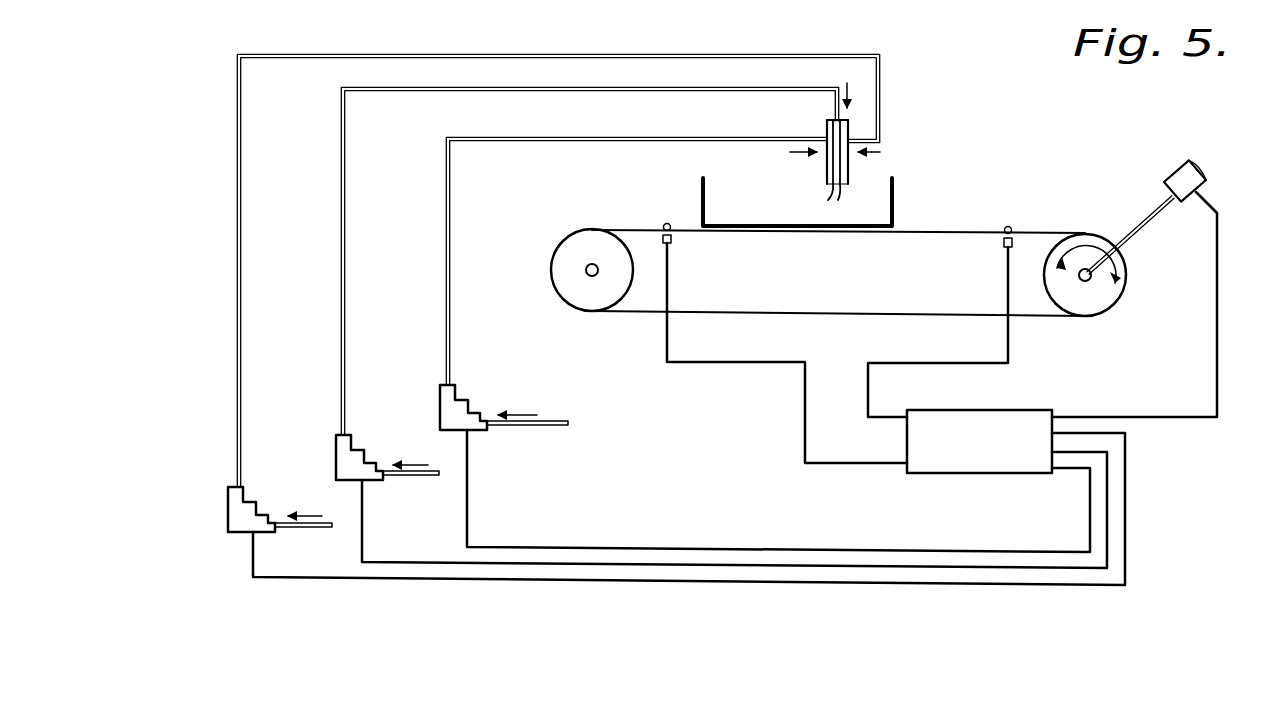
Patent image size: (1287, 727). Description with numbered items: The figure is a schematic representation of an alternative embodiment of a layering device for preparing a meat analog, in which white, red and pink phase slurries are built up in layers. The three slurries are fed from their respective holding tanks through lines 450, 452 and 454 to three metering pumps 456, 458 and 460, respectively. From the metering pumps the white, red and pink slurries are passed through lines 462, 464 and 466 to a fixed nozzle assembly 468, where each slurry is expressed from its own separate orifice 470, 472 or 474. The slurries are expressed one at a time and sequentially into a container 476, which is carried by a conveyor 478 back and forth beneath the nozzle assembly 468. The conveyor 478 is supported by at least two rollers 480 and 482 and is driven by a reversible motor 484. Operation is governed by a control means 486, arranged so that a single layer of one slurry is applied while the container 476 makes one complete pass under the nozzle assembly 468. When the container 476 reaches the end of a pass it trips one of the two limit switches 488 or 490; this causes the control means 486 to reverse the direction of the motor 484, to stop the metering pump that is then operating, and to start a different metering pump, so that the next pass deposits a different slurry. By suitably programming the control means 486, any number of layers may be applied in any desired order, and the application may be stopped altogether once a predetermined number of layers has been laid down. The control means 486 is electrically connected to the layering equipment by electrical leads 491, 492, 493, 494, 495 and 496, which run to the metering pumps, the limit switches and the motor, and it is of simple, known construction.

The line 450 is at (547, 431).
The line 452 is at (413, 478).
The line 454 is at (302, 531).
The metering pump 456 is at (467, 394).
The metering pump 458 is at (357, 449).
The metering pump 460 is at (253, 498).
The line 462 is at (453, 316).
The line 464 is at (346, 326).
The line 466 is at (240, 334).
The nozzle assembly 468 is at (826, 120).
The orifice 470 is at (841, 190).
The orifice 472 is at (826, 195).
The orifice 474 is at (830, 185).
The container 476 is at (895, 204).
The conveyor 478 is at (836, 316).
The roller 480 is at (570, 241).
The roller 482 is at (1097, 304).
The reversible motor 484 is at (1173, 174).
The control means 486 is at (966, 475).
The limit switch 488 is at (673, 240).
The limit switch 490 is at (1004, 243).
The electrical lead 491 is at (563, 582).
The electrical lead 492 is at (683, 572).
The electrical lead 493 is at (712, 546).
The electrical lead 494 is at (858, 463).
The electrical lead 495 is at (870, 387).
The electrical lead 496 is at (1220, 340).